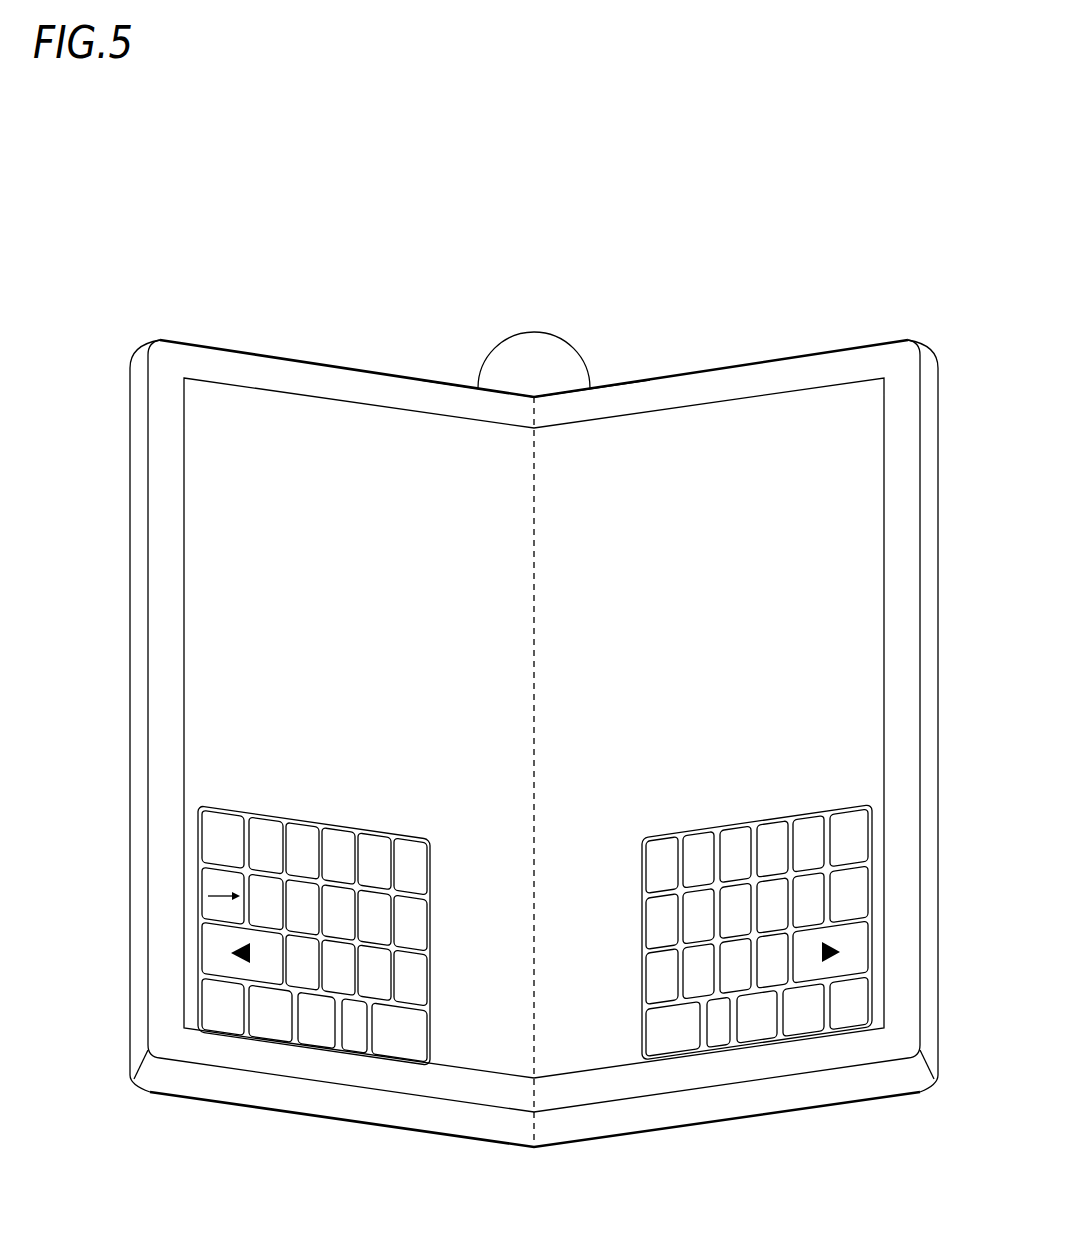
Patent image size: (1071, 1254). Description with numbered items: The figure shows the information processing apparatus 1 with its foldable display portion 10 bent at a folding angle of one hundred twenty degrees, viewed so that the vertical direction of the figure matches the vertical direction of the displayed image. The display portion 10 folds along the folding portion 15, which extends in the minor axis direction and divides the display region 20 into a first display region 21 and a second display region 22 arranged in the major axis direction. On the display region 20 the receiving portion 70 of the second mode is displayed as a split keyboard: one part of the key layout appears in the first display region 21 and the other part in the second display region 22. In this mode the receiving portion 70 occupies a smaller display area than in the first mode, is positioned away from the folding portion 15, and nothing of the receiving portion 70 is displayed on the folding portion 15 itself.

The information processing apparatus 1 is at (886, 175).
The display portion 10 is at (835, 348).
The folding portion 15 is at (533, 527).
The display region 20 is at (420, 273).
The first display region 21 is at (447, 437).
The second display region 22 is at (622, 437).
The receiving portion 70 is at (252, 720).